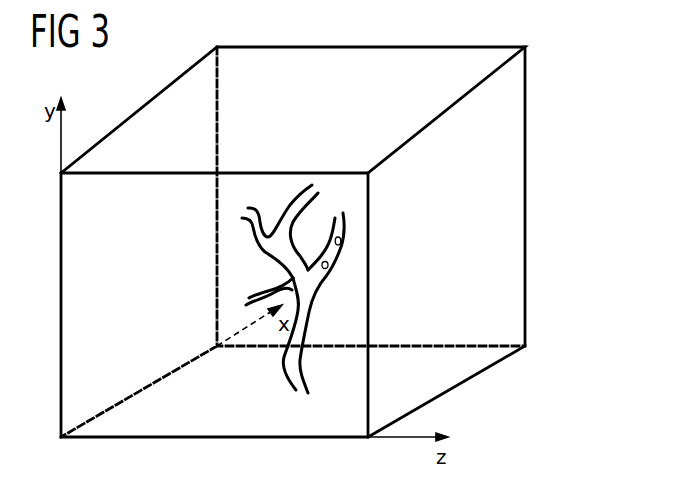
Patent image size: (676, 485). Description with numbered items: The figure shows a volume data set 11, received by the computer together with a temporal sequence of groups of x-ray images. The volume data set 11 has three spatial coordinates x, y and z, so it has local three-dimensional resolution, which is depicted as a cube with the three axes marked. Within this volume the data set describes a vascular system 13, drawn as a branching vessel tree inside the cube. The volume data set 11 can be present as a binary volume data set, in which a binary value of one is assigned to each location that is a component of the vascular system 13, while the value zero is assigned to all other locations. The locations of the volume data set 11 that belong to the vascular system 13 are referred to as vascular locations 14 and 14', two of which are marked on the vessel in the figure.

The volume data set 11 is at (553, 120).
The vascular system 13 is at (267, 254).
The vascular location 14 is at (329, 274).
The vascular location 14' is at (373, 246).